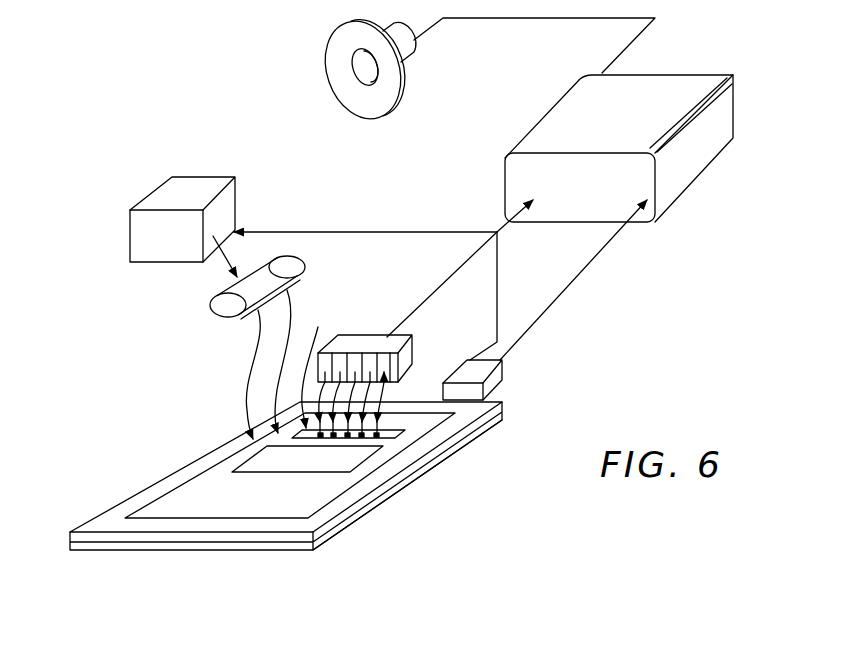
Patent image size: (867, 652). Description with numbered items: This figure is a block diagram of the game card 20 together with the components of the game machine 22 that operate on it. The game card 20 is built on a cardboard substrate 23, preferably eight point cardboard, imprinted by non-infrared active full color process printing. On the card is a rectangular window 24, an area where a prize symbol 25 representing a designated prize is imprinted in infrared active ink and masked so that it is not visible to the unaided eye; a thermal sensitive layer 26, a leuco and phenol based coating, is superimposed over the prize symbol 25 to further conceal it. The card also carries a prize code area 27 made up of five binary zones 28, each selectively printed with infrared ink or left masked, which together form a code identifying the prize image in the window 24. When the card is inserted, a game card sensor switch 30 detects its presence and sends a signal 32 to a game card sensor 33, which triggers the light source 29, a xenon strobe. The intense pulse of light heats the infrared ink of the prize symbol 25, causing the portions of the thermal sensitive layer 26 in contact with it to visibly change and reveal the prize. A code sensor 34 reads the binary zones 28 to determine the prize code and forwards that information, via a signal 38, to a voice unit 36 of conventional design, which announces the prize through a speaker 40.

The game card 20 is at (213, 551).
The game machine 22 is at (190, 391).
The cardboard substrate 23 is at (348, 522).
The rectangular window 24 is at (242, 463).
The prize symbol 25 is at (393, 480).
The thermal sensitive layer 26 is at (348, 458).
The prize code area 27 is at (392, 424).
The binary zones 28 is at (294, 364).
The light source 29 is at (212, 299).
The game card sensor switch 30 is at (500, 375).
The signal 32 is at (356, 232).
The game card sensor 33 is at (196, 178).
The code sensor 34 is at (362, 343).
The voice unit 36 is at (697, 162).
The signal 38 is at (498, 232).
The speaker 40 is at (332, 44).